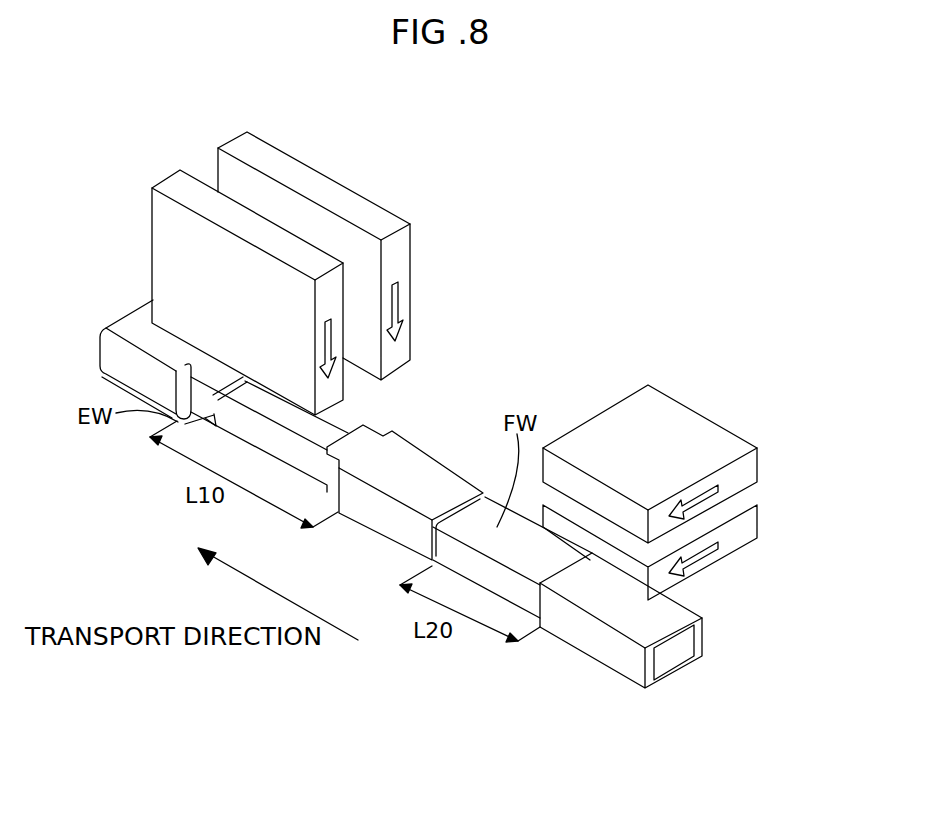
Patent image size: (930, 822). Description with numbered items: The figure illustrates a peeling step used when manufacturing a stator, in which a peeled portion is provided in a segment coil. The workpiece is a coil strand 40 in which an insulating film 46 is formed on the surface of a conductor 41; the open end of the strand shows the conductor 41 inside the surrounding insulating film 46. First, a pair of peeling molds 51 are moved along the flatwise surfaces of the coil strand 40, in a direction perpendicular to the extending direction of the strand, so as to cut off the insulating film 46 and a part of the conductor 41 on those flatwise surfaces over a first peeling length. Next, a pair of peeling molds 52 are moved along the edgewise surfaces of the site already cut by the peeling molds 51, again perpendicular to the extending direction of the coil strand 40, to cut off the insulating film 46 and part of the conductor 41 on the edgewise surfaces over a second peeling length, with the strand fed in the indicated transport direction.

The coil strand 40 is at (464, 561).
The conductor 41 is at (673, 657).
The insulating film 46 is at (638, 649).
The peeling molds 51 is at (753, 530).
The peeling molds 52 is at (232, 142).